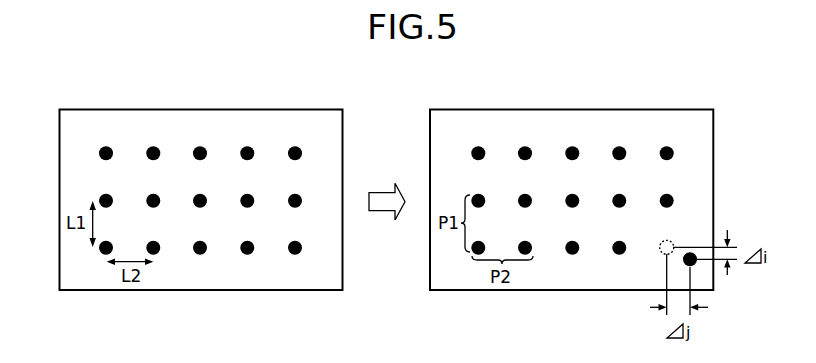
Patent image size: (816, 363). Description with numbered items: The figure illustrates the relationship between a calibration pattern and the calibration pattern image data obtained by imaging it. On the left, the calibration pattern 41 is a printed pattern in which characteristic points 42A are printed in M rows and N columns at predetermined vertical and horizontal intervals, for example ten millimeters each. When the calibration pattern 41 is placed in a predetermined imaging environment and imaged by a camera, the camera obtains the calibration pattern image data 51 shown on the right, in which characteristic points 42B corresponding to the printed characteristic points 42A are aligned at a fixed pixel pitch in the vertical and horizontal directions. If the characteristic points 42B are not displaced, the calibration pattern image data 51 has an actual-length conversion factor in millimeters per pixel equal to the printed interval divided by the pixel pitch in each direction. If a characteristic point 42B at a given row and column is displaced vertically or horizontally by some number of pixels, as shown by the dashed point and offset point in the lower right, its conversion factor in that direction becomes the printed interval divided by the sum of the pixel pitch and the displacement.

The calibration pattern 41 is at (246, 109).
The characteristic points 42A is at (296, 146).
The characteristic points 42B is at (478, 146).
The calibration pattern image data 51 is at (667, 109).